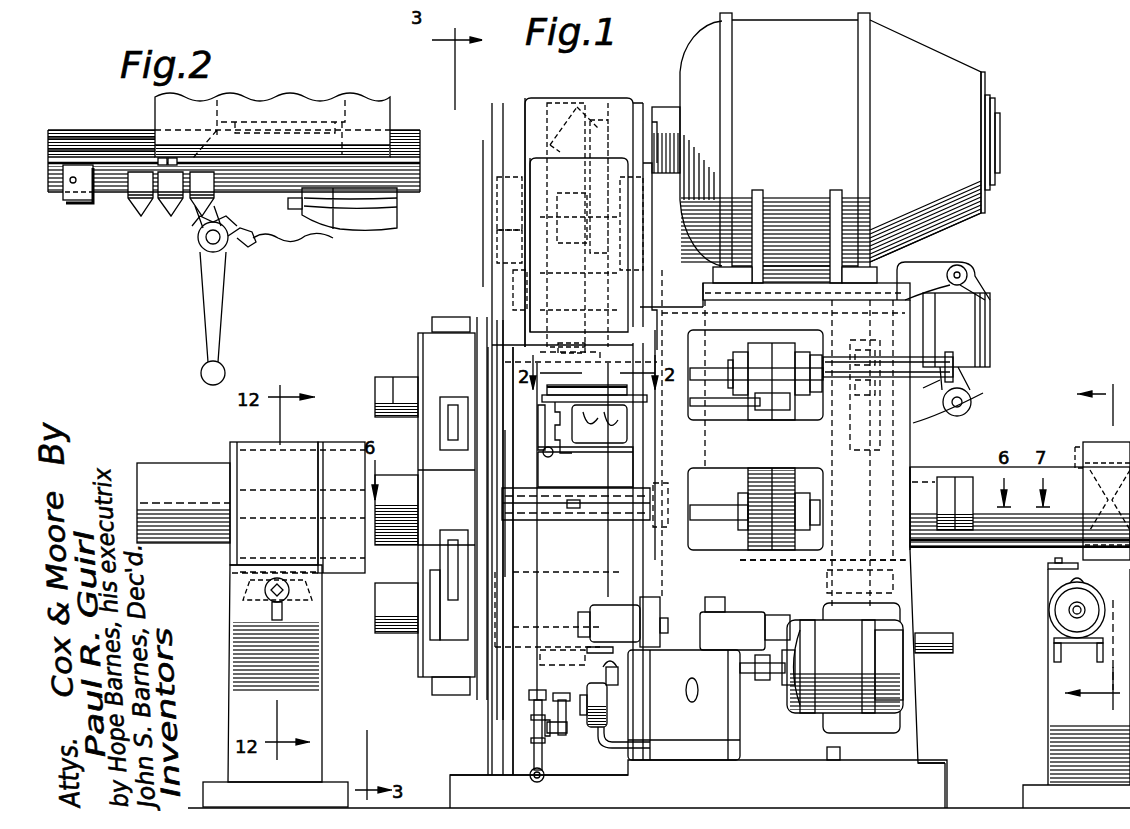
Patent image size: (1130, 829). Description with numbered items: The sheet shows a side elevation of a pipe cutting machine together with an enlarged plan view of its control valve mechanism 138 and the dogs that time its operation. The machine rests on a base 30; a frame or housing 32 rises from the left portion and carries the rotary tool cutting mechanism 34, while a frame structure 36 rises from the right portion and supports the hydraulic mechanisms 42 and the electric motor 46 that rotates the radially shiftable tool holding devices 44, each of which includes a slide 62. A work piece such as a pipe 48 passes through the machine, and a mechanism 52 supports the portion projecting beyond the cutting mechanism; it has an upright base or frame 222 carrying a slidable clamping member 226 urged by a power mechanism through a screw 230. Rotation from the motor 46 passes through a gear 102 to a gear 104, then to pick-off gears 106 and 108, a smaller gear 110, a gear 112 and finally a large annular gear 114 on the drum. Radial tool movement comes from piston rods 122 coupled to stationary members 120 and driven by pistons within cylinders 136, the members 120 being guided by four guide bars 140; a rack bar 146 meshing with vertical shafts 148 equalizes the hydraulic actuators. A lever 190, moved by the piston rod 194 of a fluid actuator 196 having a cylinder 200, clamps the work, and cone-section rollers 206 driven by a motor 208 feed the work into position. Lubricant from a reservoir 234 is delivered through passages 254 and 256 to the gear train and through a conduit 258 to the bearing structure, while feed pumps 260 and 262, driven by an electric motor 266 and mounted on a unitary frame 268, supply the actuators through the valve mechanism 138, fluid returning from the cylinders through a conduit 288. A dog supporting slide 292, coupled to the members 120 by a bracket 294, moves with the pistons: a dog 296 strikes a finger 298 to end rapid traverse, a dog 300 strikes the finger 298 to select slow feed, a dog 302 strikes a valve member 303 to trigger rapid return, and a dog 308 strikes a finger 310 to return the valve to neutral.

In FIG. 1, the base 30 is at (918, 773).
In FIG. 1, the frame or housing 32 is at (507, 723).
In FIG. 1, the rotary tool cutting mechanism 34 is at (416, 330).
In FIG. 1, the frame structure 36 is at (898, 580).
In FIG. 1, the hydraulic mechanisms 42 is at (962, 478).
In FIG. 1, the tool holding devices 44 is at (440, 386).
In FIG. 1, the electric motor 46 is at (817, 113).
In FIG. 1, the work piece 48 is at (147, 453).
In FIG. 1, the work support mechanism 52 is at (220, 441).
In FIG. 1, the slide 62 is at (448, 637).
In FIG. 1, the gear 102 is at (598, 128).
In FIG. 1, the gear 104 is at (606, 235).
In FIG. 1, the pick-off gear 106 is at (510, 172).
In FIG. 1, the pick-off gear 108 is at (505, 262).
In FIG. 1, the smaller gear 110 is at (569, 198).
In FIG. 1, the gear 112 is at (620, 262).
In FIG. 1, the annular gear 114 is at (576, 687).
In FIG. 1, the stationary members 120 is at (784, 352).
In FIG. 1, the piston rods 122 is at (715, 492).
In FIG. 1, the cylinder 136 is at (922, 483).
In FIG. 2, the valve mechanism 138 is at (331, 238).
In FIG. 1, the valve mechanism 138 is at (637, 435).
In FIG. 1, the guide bars 140 is at (712, 354).
In FIG. 1, the rack bar 146 is at (857, 796).
In FIG. 1, the vertical shafts 148 is at (873, 567).
In FIG. 1, the lever 190 is at (972, 412).
In FIG. 1, the piston rod 194 is at (960, 378).
In FIG. 1, the fluid actuator 196 is at (998, 292).
In FIG. 1, the cylinder 200 is at (993, 318).
In FIG. 1, the rollers 206 is at (1080, 472).
In FIG. 1, the electric motor 208 is at (1057, 610).
In FIG. 1, the upright base or frame 222 is at (312, 664).
In FIG. 1, the clamping member 226 is at (256, 540).
In FIG. 1, the screw 230 is at (266, 591).
In FIG. 1, the reservoir 234 is at (568, 760).
In FIG. 1, the passage 254 is at (562, 106).
In FIG. 1, the passage 256 is at (585, 108).
In FIG. 1, the conduit 258 is at (760, 342).
In FIG. 1, the feed pump 260 is at (602, 615).
In FIG. 1, the feed pump 262 is at (735, 618).
In FIG. 1, the electric motor 266 is at (900, 698).
In FIG. 1, the unitary frame 268 is at (685, 750).
In FIG. 2, the conduit 288 is at (210, 330).
In FIG. 1, the conduit 288 is at (551, 458).
In FIG. 2, the dog supporting slide 292 is at (85, 137).
In FIG. 1, the dog supporting slide 292 is at (637, 402).
In FIG. 1, the bracket 294 is at (775, 405).
In FIG. 2, the dog 296 is at (172, 210).
In FIG. 2, the finger 298 is at (250, 244).
In FIG. 2, the dog 300 is at (142, 209).
In FIG. 2, the dog 302 is at (78, 205).
In FIG. 2, the valve member 303 is at (294, 210).
In FIG. 1, the valve member 303 is at (593, 406).
In FIG. 2, the dog 308 is at (198, 204).
In FIG. 2, the finger 310 is at (206, 202).